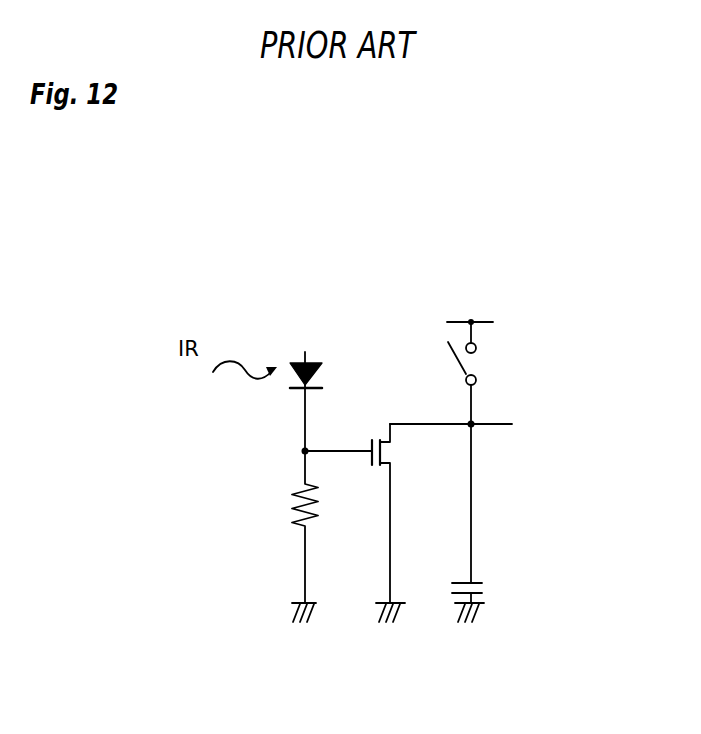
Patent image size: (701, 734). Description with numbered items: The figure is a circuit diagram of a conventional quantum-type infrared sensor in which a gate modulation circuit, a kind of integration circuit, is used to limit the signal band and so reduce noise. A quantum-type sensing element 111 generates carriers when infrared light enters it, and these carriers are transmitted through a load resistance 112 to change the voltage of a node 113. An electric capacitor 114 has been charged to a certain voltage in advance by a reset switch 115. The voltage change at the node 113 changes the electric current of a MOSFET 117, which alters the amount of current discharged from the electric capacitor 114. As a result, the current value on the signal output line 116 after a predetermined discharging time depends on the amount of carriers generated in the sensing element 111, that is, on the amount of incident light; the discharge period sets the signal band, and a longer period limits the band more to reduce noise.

The quantum-type sensing element 111 is at (320, 355).
The load resistance 112 is at (283, 515).
The node 113 is at (301, 451).
The electric capacitor 114 is at (478, 573).
The reset switch 115 is at (484, 353).
The signal output line 116 is at (513, 418).
The MOSFET 117 is at (378, 422).